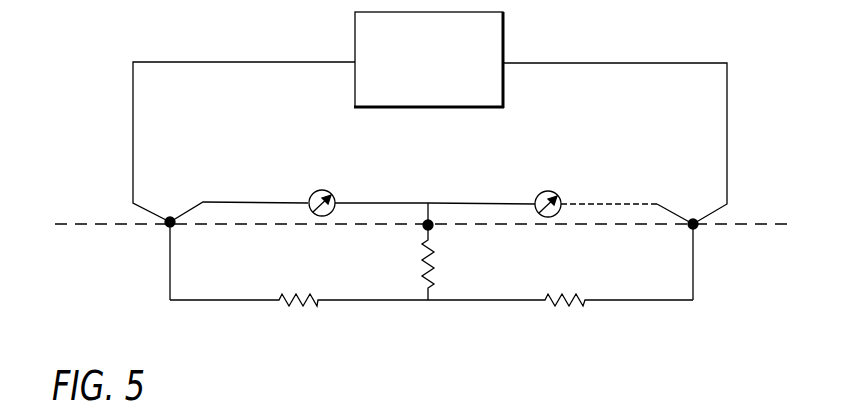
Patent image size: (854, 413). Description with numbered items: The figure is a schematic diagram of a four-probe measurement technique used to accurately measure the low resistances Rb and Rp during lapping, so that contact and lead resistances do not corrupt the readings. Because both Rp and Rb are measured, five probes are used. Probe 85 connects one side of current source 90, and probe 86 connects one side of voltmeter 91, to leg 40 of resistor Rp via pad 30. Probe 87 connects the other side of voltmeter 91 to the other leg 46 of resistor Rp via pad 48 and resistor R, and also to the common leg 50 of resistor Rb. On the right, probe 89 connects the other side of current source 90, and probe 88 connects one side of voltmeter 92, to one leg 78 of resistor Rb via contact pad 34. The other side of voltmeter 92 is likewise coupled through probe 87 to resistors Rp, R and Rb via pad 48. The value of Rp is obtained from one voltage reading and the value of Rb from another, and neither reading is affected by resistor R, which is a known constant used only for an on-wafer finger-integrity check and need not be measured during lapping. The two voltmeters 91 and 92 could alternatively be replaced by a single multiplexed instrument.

The current source 90 is at (504, 50).
The probe 85 is at (138, 208).
The probe 86 is at (184, 212).
The pad 30 is at (162, 230).
The voltmeter 91 is at (338, 198).
The probe 87 is at (432, 214).
The voltmeter 92 is at (592, 200).
The probe 88 is at (680, 206).
The probe 89 is at (712, 216).
The contact pad 34 is at (699, 230).
The leg 40 is at (170, 282).
The pad 48 is at (424, 232).
The leg 46 is at (382, 300).
The common leg 50 is at (496, 300).
The leg 78 is at (693, 280).